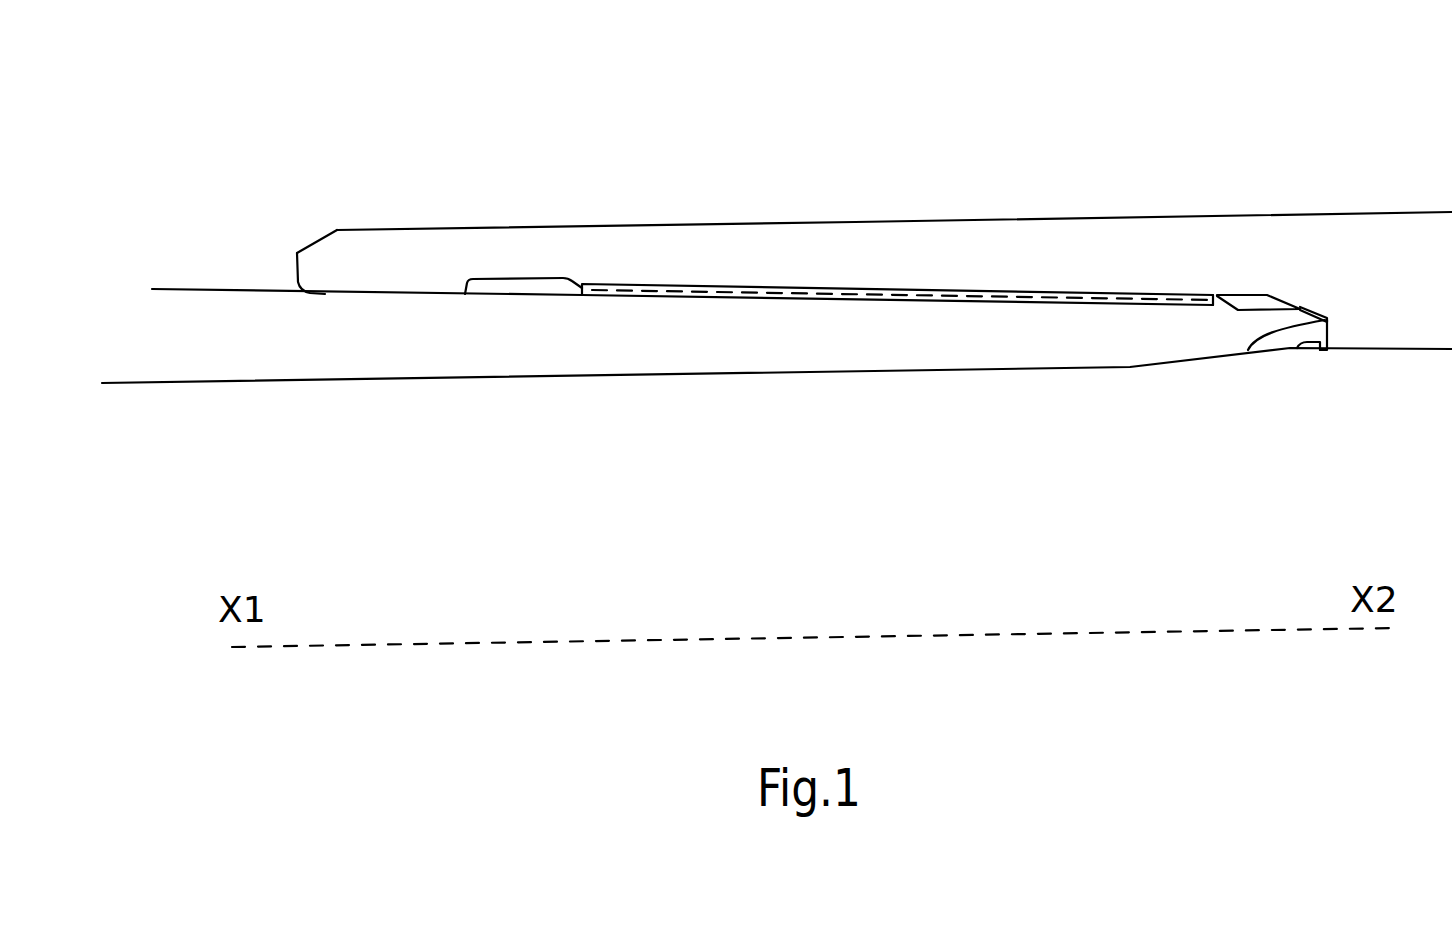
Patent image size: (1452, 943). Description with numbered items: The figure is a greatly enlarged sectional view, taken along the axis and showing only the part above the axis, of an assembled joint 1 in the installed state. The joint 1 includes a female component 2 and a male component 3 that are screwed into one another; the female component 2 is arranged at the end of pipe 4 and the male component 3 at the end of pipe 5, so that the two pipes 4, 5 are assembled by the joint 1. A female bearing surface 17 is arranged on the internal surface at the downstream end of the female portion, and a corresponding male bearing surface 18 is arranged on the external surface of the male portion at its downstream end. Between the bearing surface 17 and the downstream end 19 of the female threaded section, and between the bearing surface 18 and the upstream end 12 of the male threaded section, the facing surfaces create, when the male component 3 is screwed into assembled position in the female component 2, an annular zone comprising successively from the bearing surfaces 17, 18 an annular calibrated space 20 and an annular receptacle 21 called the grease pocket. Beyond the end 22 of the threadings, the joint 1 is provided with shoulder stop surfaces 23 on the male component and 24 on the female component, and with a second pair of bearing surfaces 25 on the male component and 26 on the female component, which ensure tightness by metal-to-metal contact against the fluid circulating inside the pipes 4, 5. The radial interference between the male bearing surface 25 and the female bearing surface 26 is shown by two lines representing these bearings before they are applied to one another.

The joint 1 is at (766, 118).
The female component 2 is at (857, 221).
The male component 3 is at (787, 374).
The pipe 4 is at (1388, 255).
The pipe 5 is at (200, 313).
The upstream end of the threaded section 12 is at (896, 231).
The downstream end of the threaded section 19 is at (580, 285).
The female bearing surface 17 is at (341, 227).
The male bearing surface 18 is at (325, 293).
The annular calibrated space 20 is at (426, 295).
The annular receptacle 21 is at (507, 283).
The end of the threadings 22 is at (1220, 297).
The shoulder stop surface 23 is at (1327, 330).
The shoulder stop surface 24 is at (1300, 347).
The male bearing surface of the second pair 25 is at (1300, 307).
The female bearing surface of the second pair 26 is at (1248, 350).